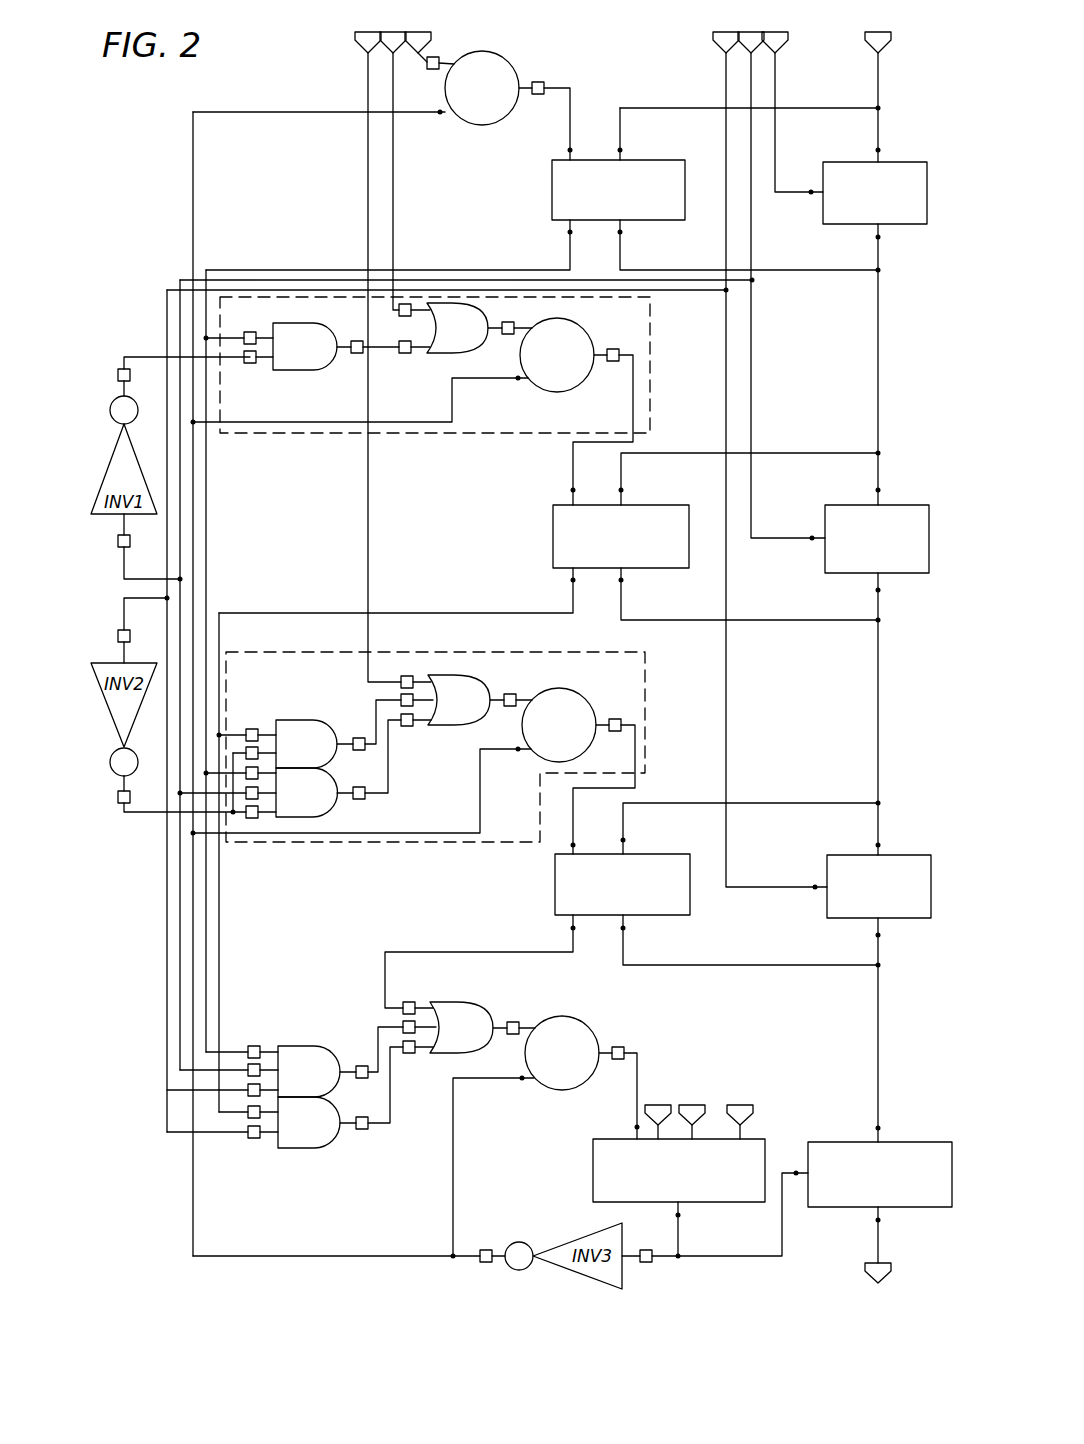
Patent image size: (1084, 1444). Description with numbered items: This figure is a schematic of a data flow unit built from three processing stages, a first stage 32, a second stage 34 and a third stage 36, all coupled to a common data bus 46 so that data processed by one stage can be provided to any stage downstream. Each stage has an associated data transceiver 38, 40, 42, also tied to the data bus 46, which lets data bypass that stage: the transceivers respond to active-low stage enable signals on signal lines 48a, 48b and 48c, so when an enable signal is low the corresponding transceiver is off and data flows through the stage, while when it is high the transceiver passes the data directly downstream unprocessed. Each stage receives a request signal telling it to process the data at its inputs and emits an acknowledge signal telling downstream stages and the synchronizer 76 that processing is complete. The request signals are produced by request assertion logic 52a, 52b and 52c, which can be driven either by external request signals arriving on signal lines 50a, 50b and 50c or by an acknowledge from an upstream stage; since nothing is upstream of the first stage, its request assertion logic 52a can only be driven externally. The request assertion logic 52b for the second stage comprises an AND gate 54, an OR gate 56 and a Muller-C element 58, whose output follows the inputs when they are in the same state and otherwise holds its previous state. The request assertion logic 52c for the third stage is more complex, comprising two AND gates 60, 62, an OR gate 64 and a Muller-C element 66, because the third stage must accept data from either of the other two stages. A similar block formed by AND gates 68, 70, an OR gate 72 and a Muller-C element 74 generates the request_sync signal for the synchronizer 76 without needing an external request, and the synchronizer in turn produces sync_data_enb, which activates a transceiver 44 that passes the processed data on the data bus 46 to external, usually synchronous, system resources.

The stage 32 is at (655, 215).
The stage 34 is at (653, 562).
The stage 36 is at (670, 908).
The data transceiver 38 is at (898, 222).
The data transceiver 40 is at (900, 572).
The data transceiver 42 is at (902, 917).
The transceiver 44 is at (900, 1205).
The data bus 46 is at (880, 85).
The signal line 48a is at (777, 98).
The signal line 48b is at (748, 168).
The signal line 48c is at (724, 100).
The signal line 50a is at (432, 57).
The signal line 50b is at (393, 193).
The signal line 50c is at (368, 162).
The request assertion logic 52a is at (490, 118).
The request assertion logic 52b is at (276, 408).
The request assertion logic 52c is at (294, 692).
The AND gate 54 is at (312, 370).
The OR gate 56 is at (447, 347).
The Muller-C element 58 is at (553, 384).
The AND gate 60 is at (312, 722).
The AND gate 62 is at (330, 805).
The OR gate 64 is at (455, 720).
The Muller-C element 66 is at (574, 702).
The AND gate 68 is at (308, 1046).
The AND gate 70 is at (322, 1148).
The OR gate 72 is at (470, 1002).
The Muller-C element 74 is at (582, 1028).
The synchronizer 76 is at (600, 1153).